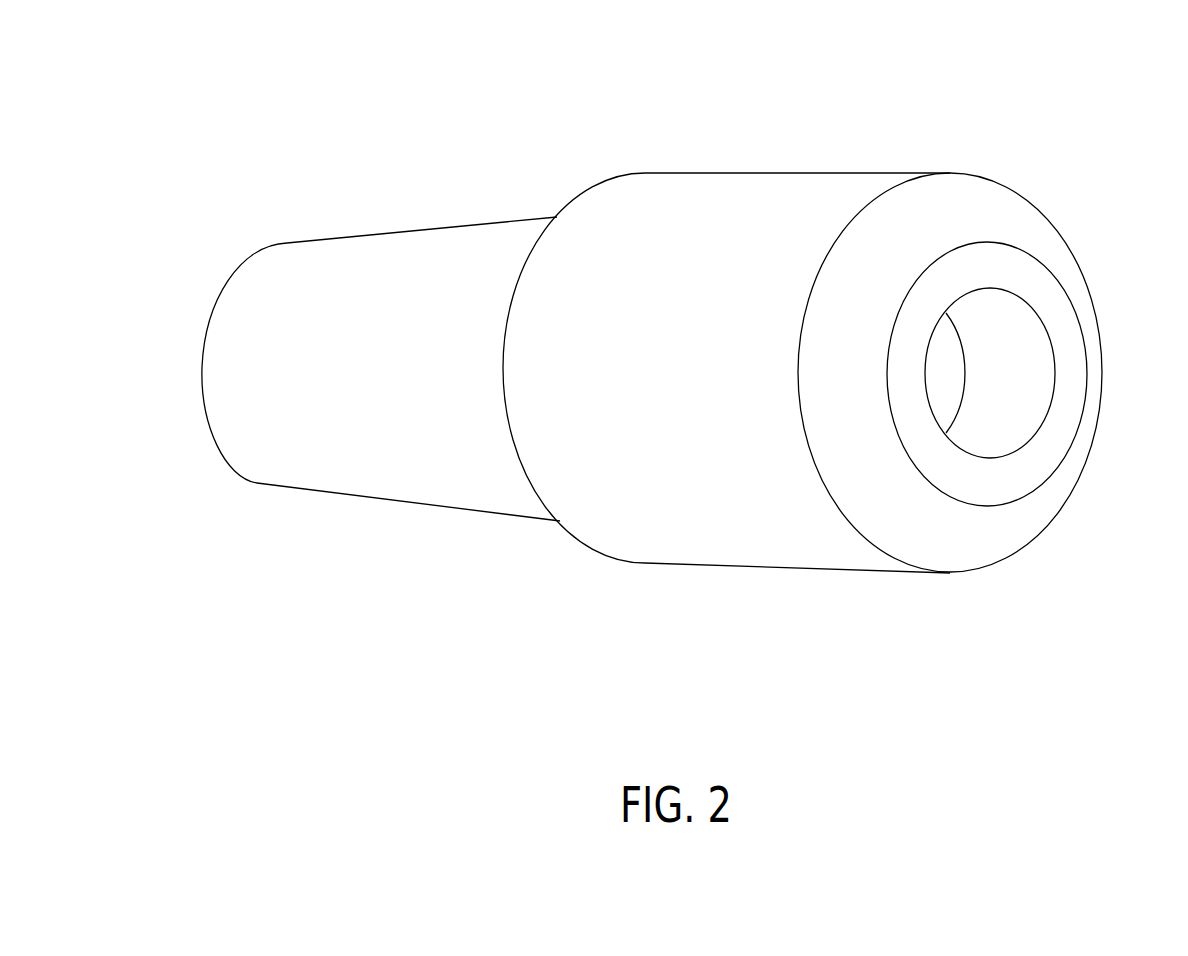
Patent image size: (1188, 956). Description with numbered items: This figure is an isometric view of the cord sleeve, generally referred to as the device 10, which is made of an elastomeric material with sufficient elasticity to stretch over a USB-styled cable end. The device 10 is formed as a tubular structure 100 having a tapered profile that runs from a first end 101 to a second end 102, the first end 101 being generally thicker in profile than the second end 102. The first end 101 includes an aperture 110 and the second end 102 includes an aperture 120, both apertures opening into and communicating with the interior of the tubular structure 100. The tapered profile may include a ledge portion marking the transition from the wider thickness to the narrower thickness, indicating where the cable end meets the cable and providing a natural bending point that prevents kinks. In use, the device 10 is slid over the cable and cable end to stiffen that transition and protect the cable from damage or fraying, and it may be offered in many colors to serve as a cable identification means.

The device 10 is at (201, 116).
The tubular structure 100 is at (538, 497).
The first end 101 is at (902, 200).
The aperture 110 is at (998, 418).
The second end 102 is at (262, 458).
The aperture 120 is at (210, 320).